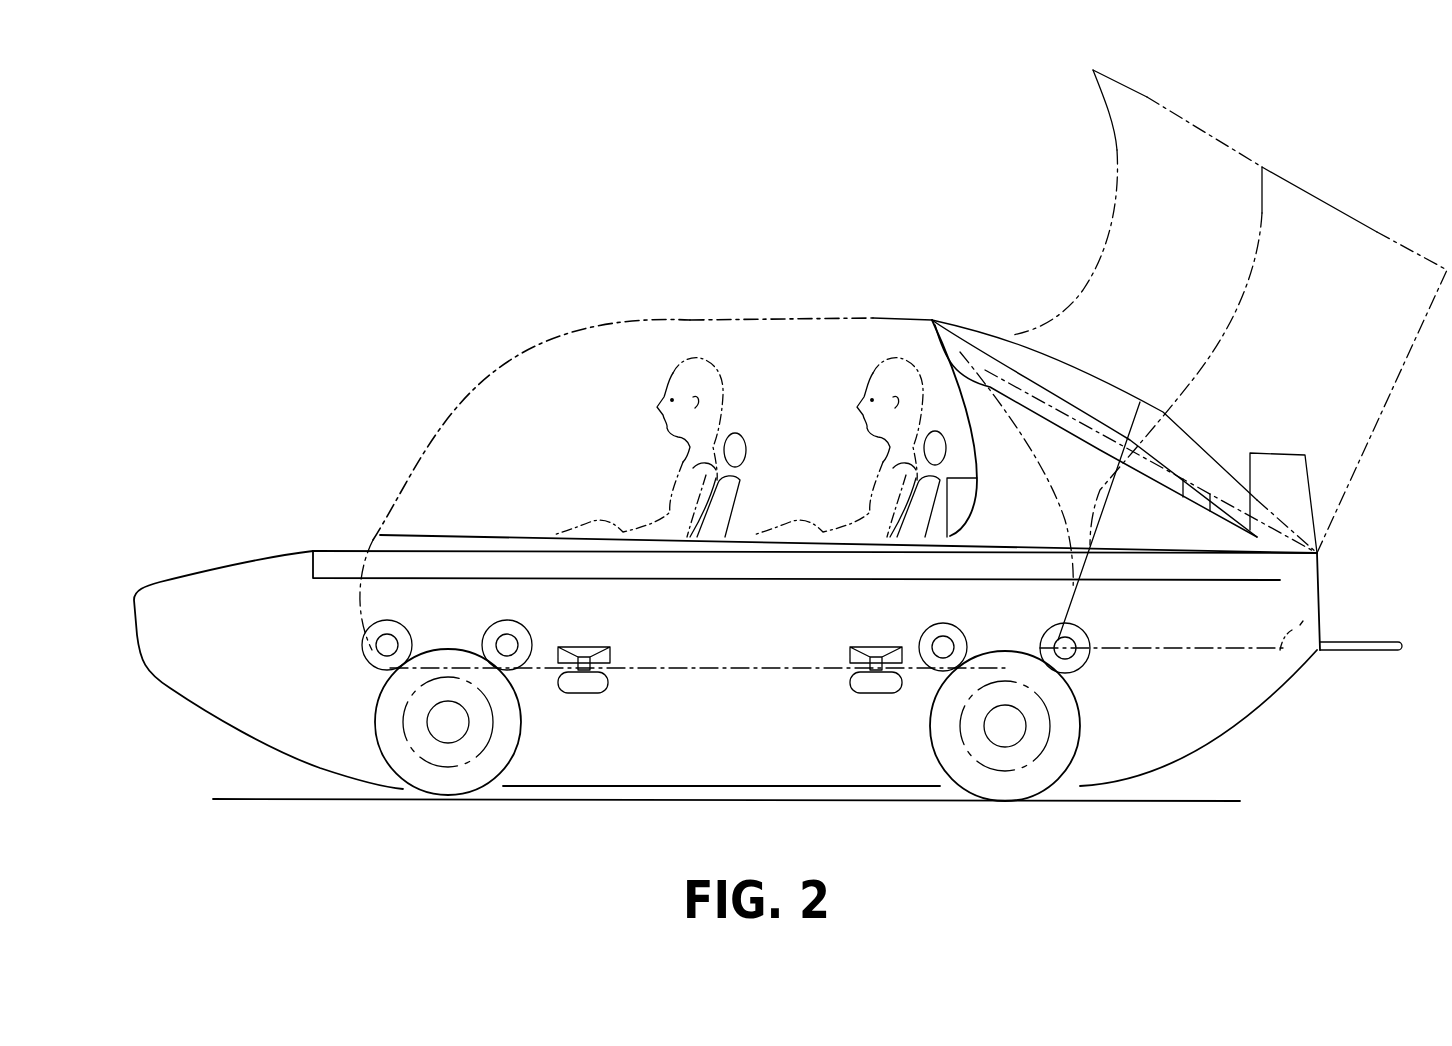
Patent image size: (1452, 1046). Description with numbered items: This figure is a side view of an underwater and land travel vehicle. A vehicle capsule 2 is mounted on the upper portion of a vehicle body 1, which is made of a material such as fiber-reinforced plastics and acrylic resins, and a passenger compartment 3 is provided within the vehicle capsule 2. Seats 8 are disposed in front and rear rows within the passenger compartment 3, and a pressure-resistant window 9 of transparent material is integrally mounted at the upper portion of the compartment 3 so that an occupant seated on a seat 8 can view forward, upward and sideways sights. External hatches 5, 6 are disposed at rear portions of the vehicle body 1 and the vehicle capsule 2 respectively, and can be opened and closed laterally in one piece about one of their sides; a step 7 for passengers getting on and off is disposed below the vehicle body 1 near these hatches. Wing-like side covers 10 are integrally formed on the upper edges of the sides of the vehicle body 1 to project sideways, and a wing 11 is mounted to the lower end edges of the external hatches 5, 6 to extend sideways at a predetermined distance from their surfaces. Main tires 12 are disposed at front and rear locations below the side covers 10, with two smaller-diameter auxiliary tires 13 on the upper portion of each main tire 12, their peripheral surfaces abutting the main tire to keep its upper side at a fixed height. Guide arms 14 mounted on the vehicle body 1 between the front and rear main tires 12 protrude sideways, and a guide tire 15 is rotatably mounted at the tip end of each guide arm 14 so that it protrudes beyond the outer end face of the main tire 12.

The vehicle body 1 is at (257, 570).
The vehicle capsule 2 is at (957, 310).
The passenger compartment 3 is at (810, 347).
The external hatch 5 is at (1320, 227).
The external hatch 6 is at (1197, 150).
The step 7 is at (1313, 618).
The seat 8 is at (747, 480).
The window 9 is at (692, 315).
The side cover 10 is at (694, 565).
The wing 11 is at (1277, 463).
The main tire 12 is at (455, 785).
The auxiliary tire 13 is at (383, 652).
The guide arm 14 is at (612, 650).
The guide tire 15 is at (580, 693).